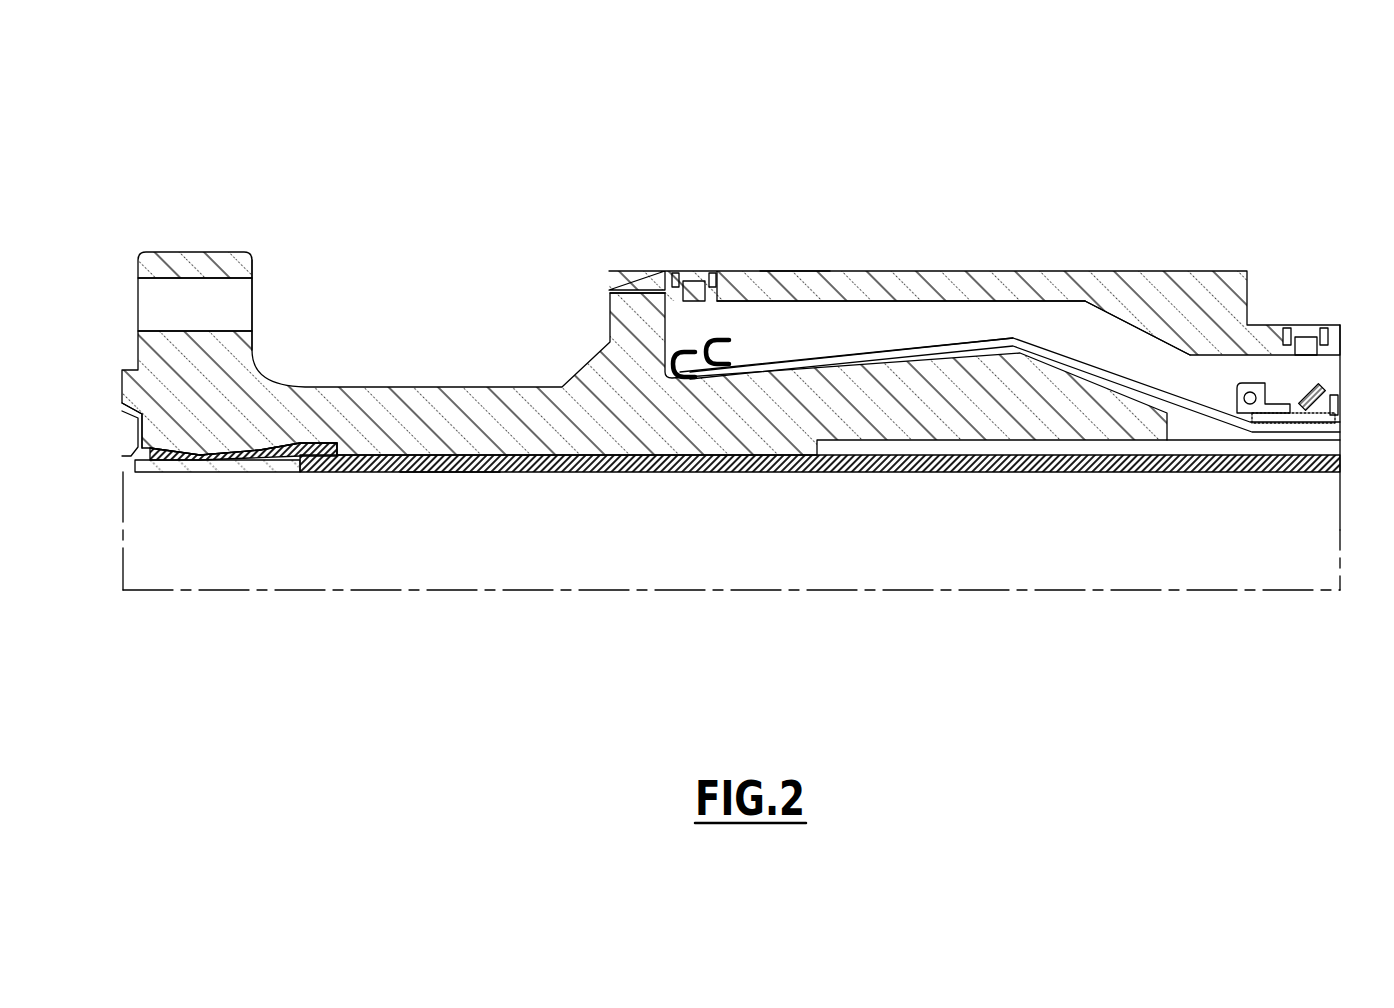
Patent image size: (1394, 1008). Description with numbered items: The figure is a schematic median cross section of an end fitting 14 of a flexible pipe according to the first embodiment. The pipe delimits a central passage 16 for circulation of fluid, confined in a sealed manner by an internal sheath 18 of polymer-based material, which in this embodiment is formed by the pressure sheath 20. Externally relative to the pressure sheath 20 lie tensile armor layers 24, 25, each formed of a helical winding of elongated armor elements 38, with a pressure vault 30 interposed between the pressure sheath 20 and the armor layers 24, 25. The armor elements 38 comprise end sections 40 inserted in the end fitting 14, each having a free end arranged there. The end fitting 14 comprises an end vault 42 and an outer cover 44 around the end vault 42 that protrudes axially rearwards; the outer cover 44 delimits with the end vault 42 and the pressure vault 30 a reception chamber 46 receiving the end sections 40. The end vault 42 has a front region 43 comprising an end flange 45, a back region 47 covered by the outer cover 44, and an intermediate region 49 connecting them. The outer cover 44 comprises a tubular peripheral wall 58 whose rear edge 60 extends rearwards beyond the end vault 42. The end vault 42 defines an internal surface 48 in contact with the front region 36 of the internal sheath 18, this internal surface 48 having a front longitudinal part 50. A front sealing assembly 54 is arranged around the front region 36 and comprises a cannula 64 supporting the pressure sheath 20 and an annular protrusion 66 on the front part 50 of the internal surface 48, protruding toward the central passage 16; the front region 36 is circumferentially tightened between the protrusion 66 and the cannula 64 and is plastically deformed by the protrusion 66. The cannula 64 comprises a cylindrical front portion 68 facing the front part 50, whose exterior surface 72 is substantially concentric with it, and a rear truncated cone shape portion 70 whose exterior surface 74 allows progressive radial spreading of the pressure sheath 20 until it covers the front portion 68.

The end fitting 14 is at (791, 186).
The central passage 16 is at (1250, 582).
The internal sheath 18 is at (606, 474).
The pressure sheath 20 is at (450, 474).
The tensile armor layer 24 is at (1340, 433).
The tensile armor layer 25 is at (1345, 423).
The pressure vault 30 is at (1328, 446).
The front region of the internal sheath 36 is at (267, 447).
The elongated armor element 38 is at (1084, 352).
The end sections 40 is at (762, 367).
The end vault 42 is at (207, 364).
The front region 43 is at (272, 271).
The outer cover 44 is at (912, 268).
The end flange 45 is at (232, 258).
The reception chamber 46 is at (866, 325).
The back region 47 is at (830, 236).
The internal surface 48 is at (343, 487).
The intermediate region 49 is at (498, 298).
The front longitudinal part 50 is at (260, 447).
The front sealing assembly 54 is at (207, 490).
The tubular peripheral wall 58 is at (1118, 290).
The rear edge 60 is at (1228, 320).
The cannula 64 is at (163, 487).
The annular protrusion 66 is at (217, 437).
The cylindrical front portion 68 is at (232, 475).
The rear truncated cone shape portion 70 is at (296, 475).
The exterior surface 72 is at (123, 428).
The exterior surface 74 is at (311, 436).